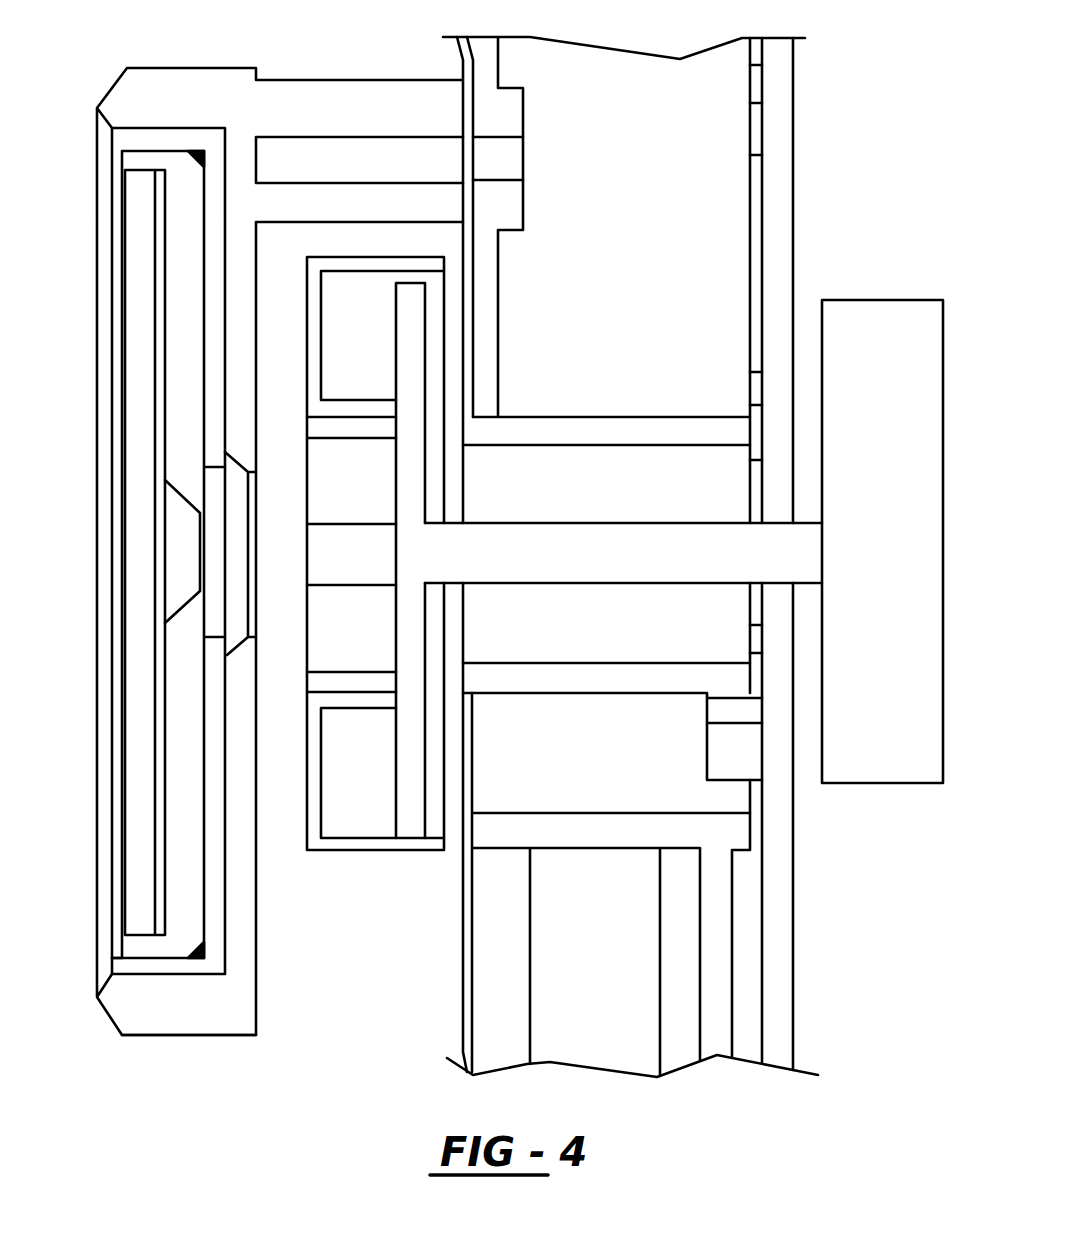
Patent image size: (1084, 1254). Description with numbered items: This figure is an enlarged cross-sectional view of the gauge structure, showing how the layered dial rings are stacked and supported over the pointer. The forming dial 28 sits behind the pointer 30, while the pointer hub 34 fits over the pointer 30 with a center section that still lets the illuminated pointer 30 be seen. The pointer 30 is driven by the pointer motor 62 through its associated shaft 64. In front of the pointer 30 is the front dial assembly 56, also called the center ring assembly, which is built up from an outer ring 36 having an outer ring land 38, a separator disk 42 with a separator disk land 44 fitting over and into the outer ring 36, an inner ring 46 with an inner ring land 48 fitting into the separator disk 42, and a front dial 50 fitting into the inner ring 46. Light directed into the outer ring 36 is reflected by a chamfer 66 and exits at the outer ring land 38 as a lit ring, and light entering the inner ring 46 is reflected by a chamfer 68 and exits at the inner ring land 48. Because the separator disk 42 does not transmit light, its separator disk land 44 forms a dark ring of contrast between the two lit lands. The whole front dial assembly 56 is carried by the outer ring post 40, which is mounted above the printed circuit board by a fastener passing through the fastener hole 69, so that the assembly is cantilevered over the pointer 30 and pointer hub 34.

The forming dial 28 is at (450, 1058).
The pointer 30 is at (398, 772).
The pointer hub 34 is at (347, 853).
The outer ring 36 is at (200, 1035).
The outer ring land 38 is at (117, 92).
The outer ring post 40 is at (333, 79).
The separator disk 42 is at (143, 963).
The separator disk land 44 is at (112, 137).
The inner ring 46 is at (191, 727).
The inner ring land 48 is at (123, 162).
The front dial 50 is at (157, 265).
The front dial assembly 56 is at (280, 1046).
The pointer motor 62 is at (891, 317).
The shaft 64 is at (807, 557).
The chamfer 66 is at (240, 648).
The chamfer 68 is at (180, 610).
The fastener hole 69 is at (507, 163).